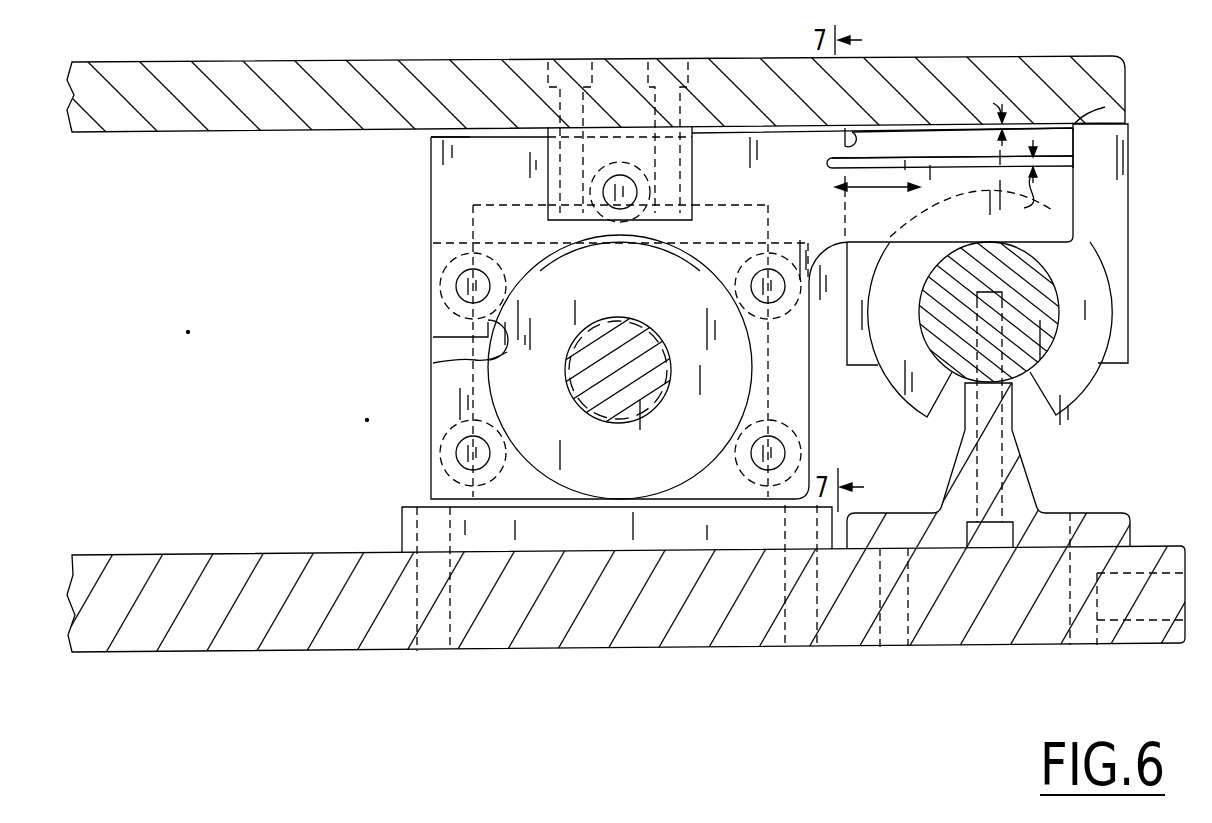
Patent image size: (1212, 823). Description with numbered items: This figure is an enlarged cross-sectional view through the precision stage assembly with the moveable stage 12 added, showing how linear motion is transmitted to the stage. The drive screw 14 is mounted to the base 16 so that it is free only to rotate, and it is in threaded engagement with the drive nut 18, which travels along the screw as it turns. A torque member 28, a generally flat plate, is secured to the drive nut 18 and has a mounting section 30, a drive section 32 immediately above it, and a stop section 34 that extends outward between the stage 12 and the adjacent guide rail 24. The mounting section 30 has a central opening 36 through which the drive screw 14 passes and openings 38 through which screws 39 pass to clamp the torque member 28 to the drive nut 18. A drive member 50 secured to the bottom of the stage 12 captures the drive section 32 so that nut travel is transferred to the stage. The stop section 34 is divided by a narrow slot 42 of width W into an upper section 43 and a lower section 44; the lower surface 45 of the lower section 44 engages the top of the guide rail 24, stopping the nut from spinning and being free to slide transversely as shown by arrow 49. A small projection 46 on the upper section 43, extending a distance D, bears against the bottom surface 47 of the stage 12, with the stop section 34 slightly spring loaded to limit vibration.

The moveable stage 12 is at (291, 62).
The drive screw 14 is at (645, 317).
The base 16 is at (236, 553).
The drive nut 18 is at (592, 505).
The guide rail 24 is at (1082, 383).
The torque member 28 is at (428, 387).
The mounting section 30 is at (433, 433).
The drive section 32 is at (428, 164).
The stop section 34 is at (1087, 197).
The central opening 36 is at (433, 363).
The openings 38 is at (460, 306).
The screws 39 is at (455, 282).
The slot 42 is at (912, 158).
The upper section 43 is at (1057, 146).
The lower section 44 is at (1077, 213).
The lower surface 45 is at (1078, 240).
The projection 46 is at (1105, 107).
The bottom surface 47 is at (845, 147).
The arrow 49 is at (860, 187).
The drive member 50 is at (548, 192).